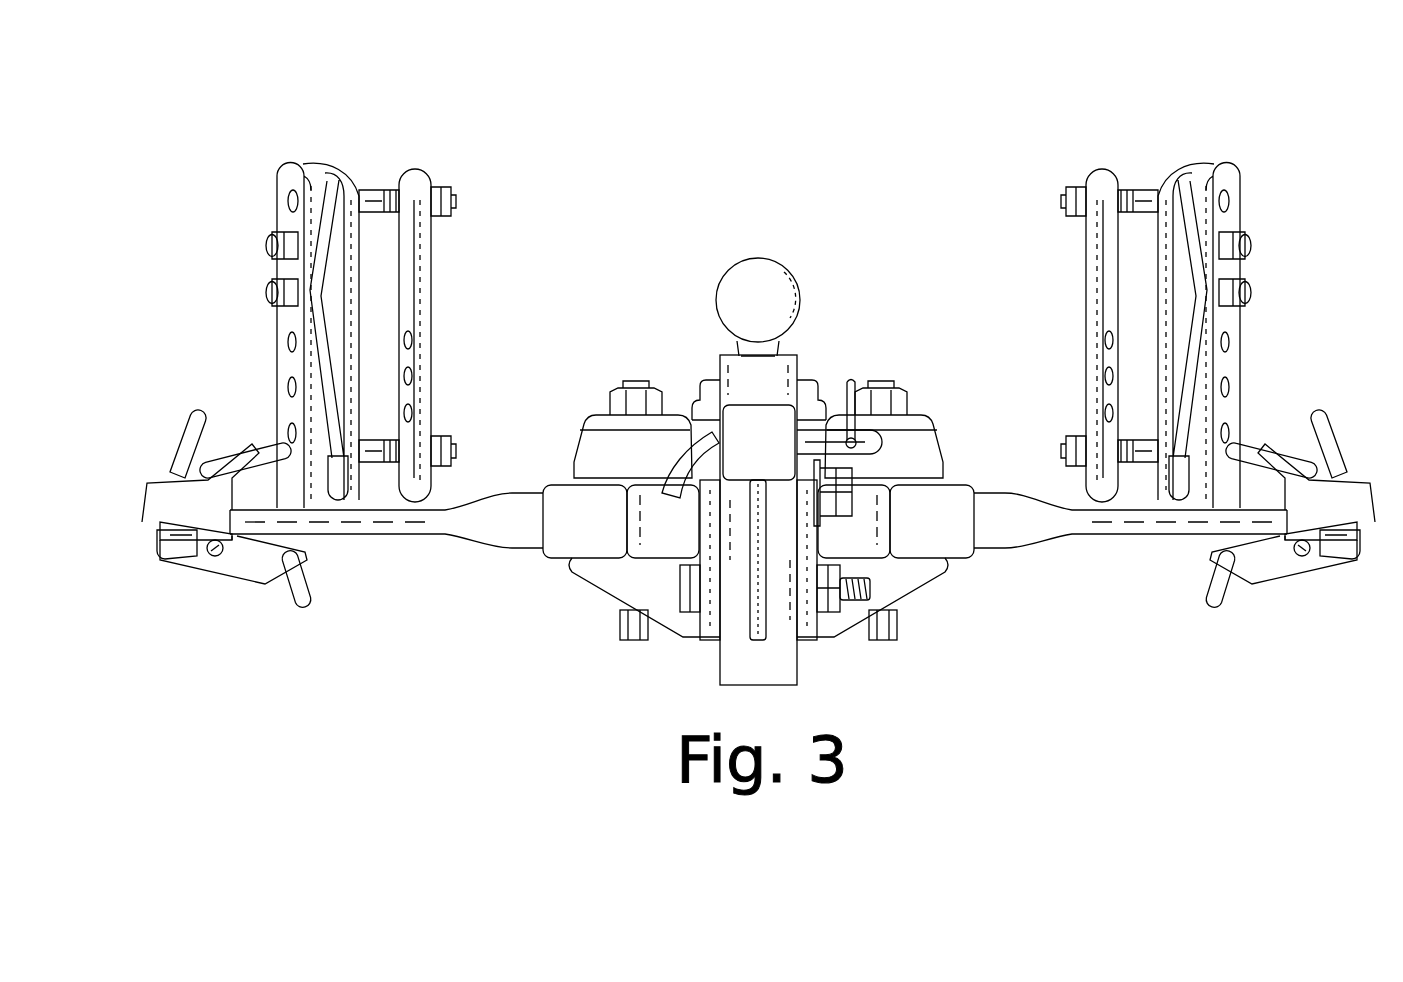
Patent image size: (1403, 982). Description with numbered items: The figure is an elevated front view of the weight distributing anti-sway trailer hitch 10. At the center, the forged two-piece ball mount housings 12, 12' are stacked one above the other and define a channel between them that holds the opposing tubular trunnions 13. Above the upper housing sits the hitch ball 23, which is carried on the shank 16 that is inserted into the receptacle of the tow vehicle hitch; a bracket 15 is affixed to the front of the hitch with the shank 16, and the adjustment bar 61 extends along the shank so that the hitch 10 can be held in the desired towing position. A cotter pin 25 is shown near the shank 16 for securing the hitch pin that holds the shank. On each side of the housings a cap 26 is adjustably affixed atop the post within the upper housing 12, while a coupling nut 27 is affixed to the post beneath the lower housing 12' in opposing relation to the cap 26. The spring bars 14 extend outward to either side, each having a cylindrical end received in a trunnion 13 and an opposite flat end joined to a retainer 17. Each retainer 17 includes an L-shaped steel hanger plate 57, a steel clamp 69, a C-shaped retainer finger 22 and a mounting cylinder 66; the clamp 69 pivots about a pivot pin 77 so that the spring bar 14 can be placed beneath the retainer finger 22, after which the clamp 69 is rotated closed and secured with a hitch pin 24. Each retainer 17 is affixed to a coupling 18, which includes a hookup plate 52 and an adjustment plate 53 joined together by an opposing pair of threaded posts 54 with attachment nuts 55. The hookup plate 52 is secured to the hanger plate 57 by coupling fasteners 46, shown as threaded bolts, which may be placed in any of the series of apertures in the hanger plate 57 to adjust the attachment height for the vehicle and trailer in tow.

The anti-sway trailer hitch 10 is at (916, 172).
The ball mount housing 12 is at (758, 446).
The ball mount housing 12' is at (758, 597).
The trunnion 13 is at (566, 530).
The spring bar 14 is at (450, 540).
The bracket 15 is at (712, 641).
The shank 16 is at (775, 454).
The retainer 17 is at (203, 605).
The coupling 18 is at (460, 257).
The C-shaped retainer finger 22 is at (268, 445).
The hitch ball 23 is at (778, 272).
The hitch pin 24 is at (306, 600).
The cotter pin 25 is at (849, 392).
The cap 26 is at (600, 405).
The coupling nut 27 is at (625, 632).
The coupling fastener 46 is at (268, 293).
The hookup plate 52 is at (336, 166).
The adjustment plate 53 is at (418, 172).
The threaded post 54 is at (374, 198).
The attachment nut 55 is at (452, 192).
The hanger plate 57 is at (290, 170).
The adjustment bar 61 is at (775, 671).
The mounting cylinder 66 is at (182, 444).
The clamp 69 is at (236, 566).
The pivot pin 77 is at (176, 562).